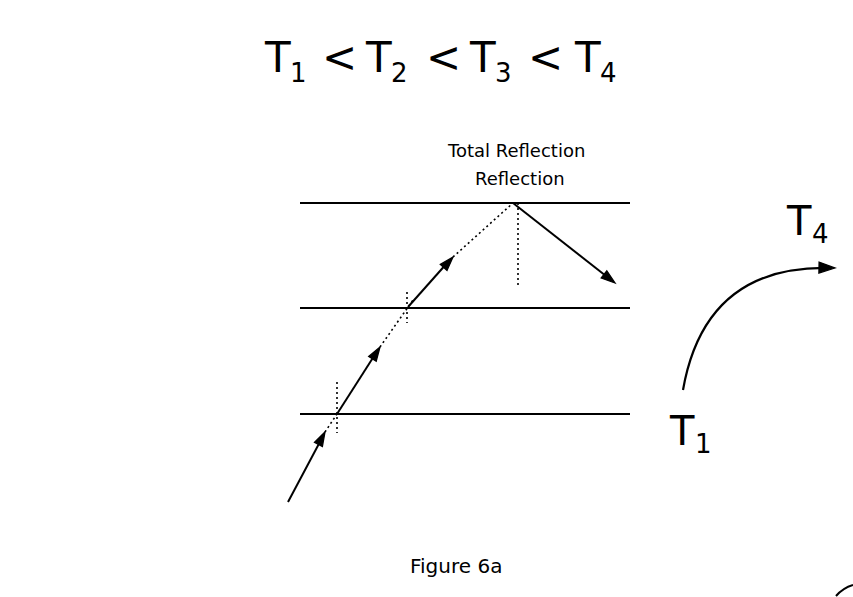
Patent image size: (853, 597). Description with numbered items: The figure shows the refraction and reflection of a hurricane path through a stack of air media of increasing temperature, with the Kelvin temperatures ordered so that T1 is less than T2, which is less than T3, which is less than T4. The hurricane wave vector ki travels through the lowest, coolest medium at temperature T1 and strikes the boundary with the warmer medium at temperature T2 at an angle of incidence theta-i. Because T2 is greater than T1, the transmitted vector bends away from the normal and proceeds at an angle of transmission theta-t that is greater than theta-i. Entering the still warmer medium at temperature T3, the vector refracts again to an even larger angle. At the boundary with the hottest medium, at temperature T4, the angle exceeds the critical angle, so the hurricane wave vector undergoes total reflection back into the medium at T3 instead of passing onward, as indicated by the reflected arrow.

The Kelvin scale temperature of medium number 1 T1 is at (209, 482).
The Kelvin scale temperature of medium number 2 T2 is at (403, 371).
The Kelvin scale temperature of medium number 3 T3 is at (402, 263).
The Kelvin scale temperature of medium number 4 T4 is at (457, 157).
The hurricane wave vector ki is at (298, 483).
The angle of incidence theta-i is at (340, 417).
The angle of transmission theta-t is at (358, 375).